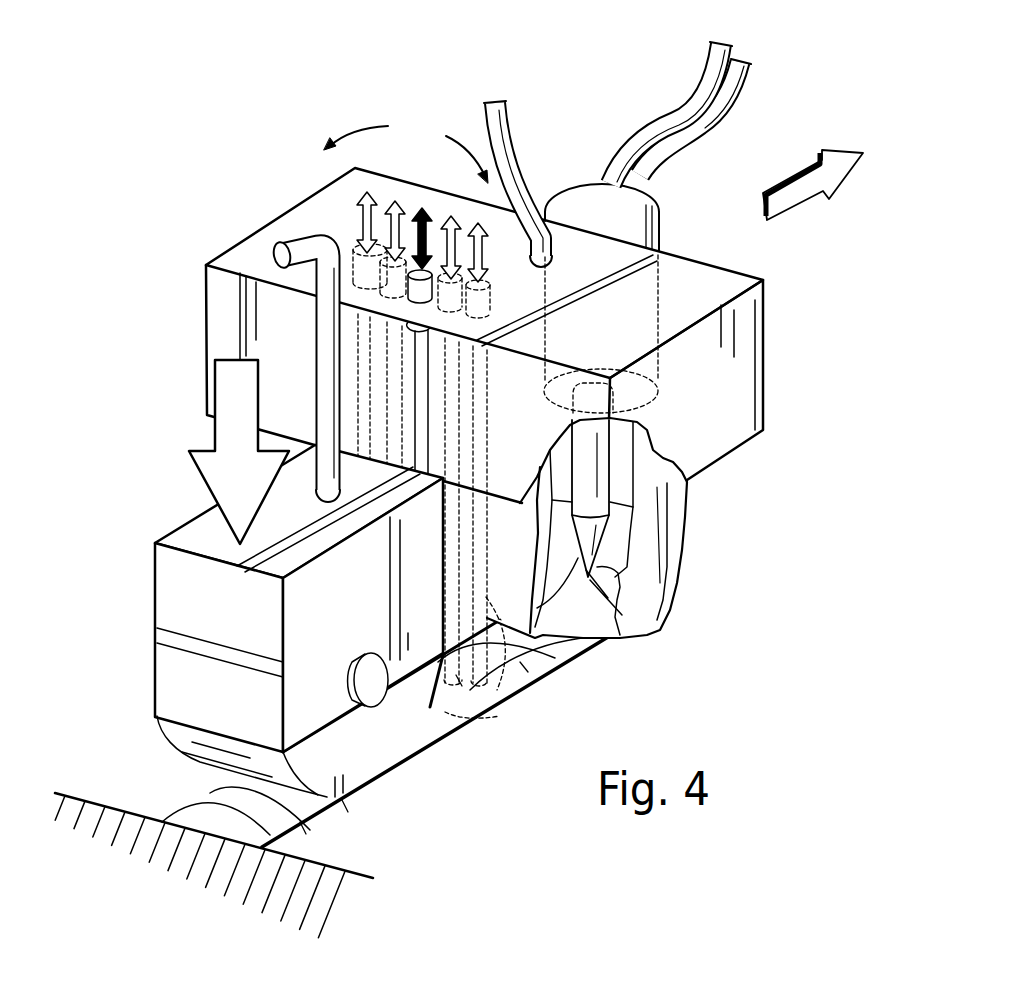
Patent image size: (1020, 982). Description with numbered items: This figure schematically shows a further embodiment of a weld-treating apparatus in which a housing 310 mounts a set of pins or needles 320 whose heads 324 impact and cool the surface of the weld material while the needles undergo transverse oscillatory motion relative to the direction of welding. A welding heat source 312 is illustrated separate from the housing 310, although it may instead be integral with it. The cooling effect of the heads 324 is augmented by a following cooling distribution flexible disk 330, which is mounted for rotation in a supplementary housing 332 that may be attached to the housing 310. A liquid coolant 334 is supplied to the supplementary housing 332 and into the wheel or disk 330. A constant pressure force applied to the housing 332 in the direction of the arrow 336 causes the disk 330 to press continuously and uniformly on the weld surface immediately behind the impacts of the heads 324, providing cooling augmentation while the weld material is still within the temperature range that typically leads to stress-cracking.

The housing 310 is at (223, 250).
The welding heat source 312 is at (633, 218).
The pins or needles 320 is at (500, 695).
The heads 324 is at (490, 723).
The cooling distribution flexible disk 330 is at (367, 767).
The supplementary housing 332 is at (187, 540).
The liquid coolant 334 is at (297, 240).
The arrow 336 is at (228, 441).